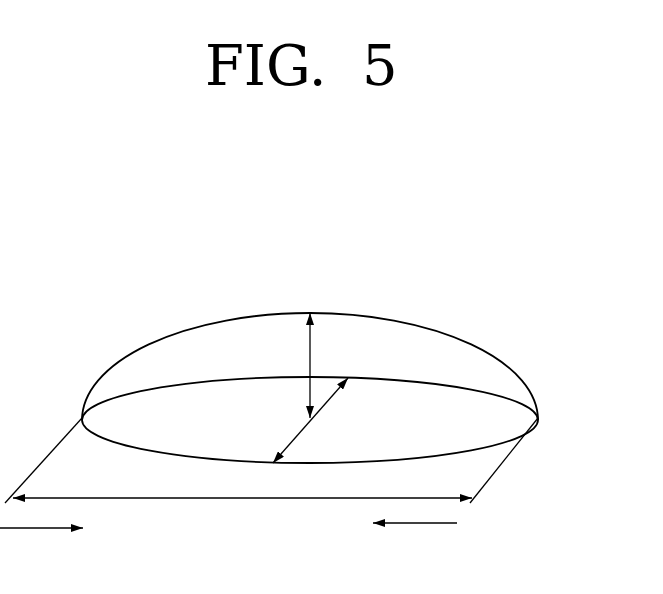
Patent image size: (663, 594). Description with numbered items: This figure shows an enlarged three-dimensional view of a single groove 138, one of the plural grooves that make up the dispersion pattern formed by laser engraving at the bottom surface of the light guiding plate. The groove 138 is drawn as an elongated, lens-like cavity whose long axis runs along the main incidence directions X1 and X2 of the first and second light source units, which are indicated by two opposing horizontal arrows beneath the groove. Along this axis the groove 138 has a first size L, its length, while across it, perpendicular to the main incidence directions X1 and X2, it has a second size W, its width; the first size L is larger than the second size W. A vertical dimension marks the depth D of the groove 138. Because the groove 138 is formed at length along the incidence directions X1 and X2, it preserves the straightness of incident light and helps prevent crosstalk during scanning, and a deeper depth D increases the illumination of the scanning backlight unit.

The groove 138 is at (404, 300).
The first size L is at (271, 472).
The second size W is at (310, 420).
The depth D is at (322, 365).
The main incidence direction X1 is at (41, 541).
The main incidence direction X2 is at (415, 537).